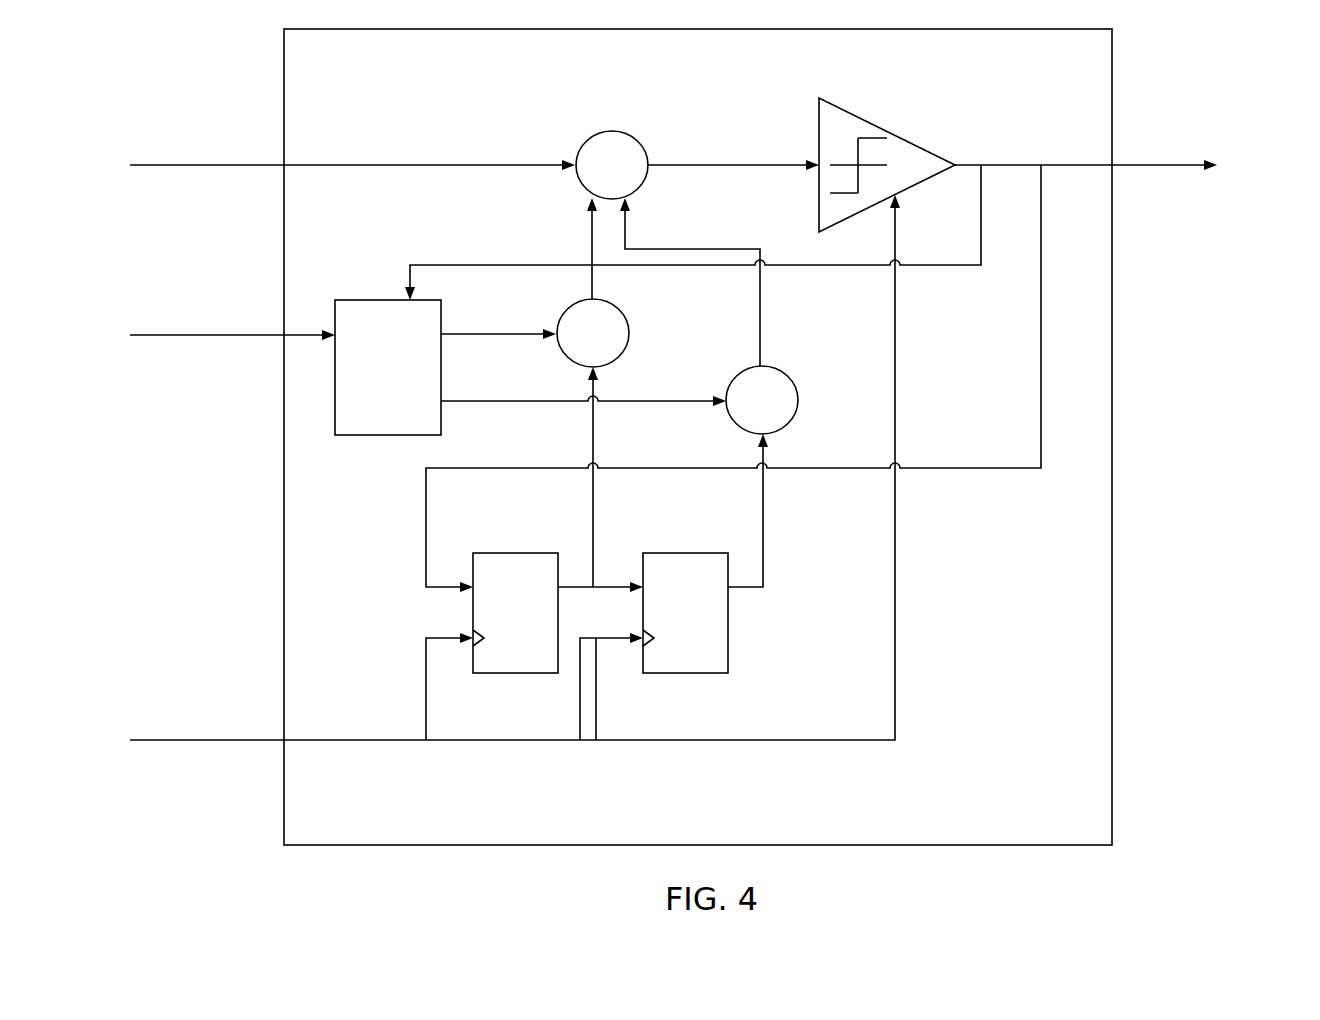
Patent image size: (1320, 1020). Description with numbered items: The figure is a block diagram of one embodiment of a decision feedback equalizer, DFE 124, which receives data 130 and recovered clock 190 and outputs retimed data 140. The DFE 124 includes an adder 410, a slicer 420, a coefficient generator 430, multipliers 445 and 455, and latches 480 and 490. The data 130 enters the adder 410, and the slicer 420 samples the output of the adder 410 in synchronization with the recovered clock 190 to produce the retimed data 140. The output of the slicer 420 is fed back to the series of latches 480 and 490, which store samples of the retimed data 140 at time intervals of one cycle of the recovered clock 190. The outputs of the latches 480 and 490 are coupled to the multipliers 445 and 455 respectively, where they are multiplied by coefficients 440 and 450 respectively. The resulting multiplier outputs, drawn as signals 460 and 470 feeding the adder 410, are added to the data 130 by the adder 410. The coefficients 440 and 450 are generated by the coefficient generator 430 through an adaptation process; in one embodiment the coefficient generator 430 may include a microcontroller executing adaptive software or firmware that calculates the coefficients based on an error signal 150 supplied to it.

The decision feedback equalizer 124 is at (571, 58).
The data 130 is at (352, 154).
The retimed data 140 is at (1118, 153).
The error signal 150 is at (222, 324).
The recovered clock 190 is at (496, 467).
The adder 410 is at (628, 131).
The slicer 420 is at (863, 115).
The coefficient generator 430 is at (388, 367).
The coefficient 440 is at (465, 332).
The multiplier 445 is at (600, 298).
The coefficient 450 is at (472, 398).
The multiplier 455 is at (765, 366).
The first feedback signal 460 is at (590, 248).
The second feedback signal 470 is at (643, 249).
The latch 480 is at (558, 520).
The latch 490 is at (705, 553).